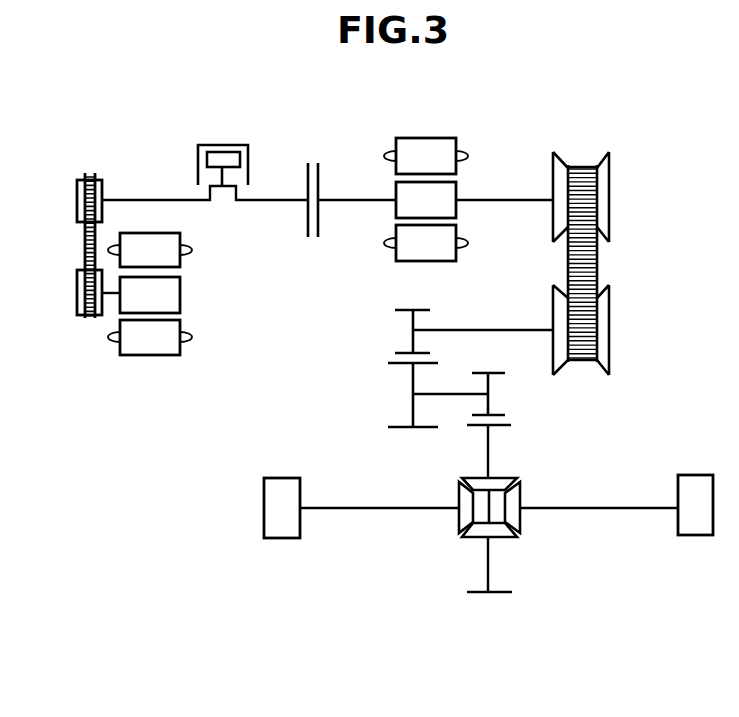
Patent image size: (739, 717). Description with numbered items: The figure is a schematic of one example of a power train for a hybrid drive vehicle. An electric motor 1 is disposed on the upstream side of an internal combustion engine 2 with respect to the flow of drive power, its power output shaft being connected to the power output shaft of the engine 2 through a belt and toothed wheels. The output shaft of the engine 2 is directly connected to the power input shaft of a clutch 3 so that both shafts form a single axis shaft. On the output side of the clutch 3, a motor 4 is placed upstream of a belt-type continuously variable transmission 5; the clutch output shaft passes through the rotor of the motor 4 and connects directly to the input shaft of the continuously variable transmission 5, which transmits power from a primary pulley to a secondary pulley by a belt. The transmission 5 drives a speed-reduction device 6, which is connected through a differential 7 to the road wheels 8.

The electric motor 1 is at (152, 357).
The internal combustion engine 2 is at (223, 145).
The clutch 3 is at (308, 235).
The motor 4 is at (421, 137).
The continuously variable transmission 5 is at (609, 215).
The speed-reduction device 6 is at (413, 380).
The differential 7 is at (520, 530).
The road wheels 8 is at (282, 540).